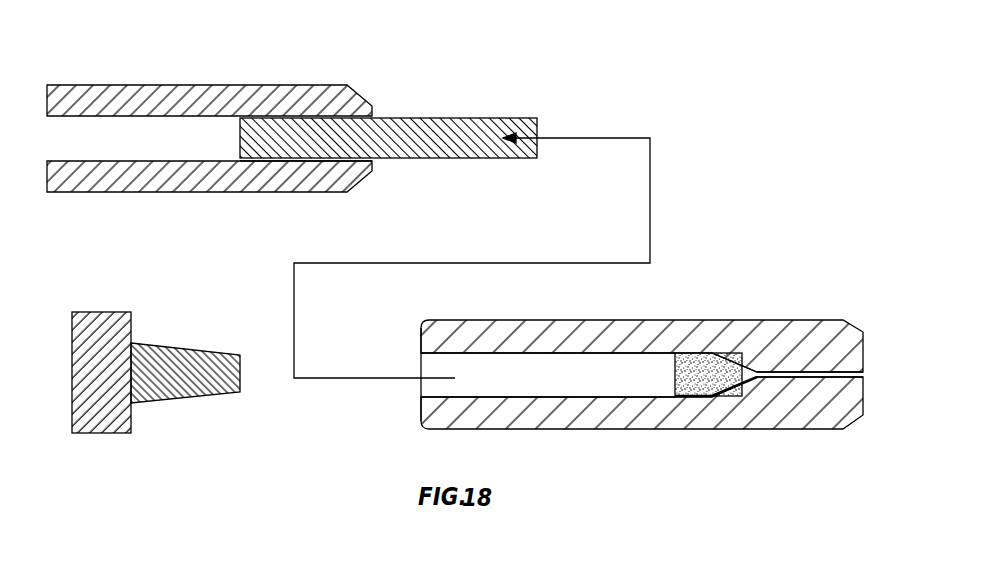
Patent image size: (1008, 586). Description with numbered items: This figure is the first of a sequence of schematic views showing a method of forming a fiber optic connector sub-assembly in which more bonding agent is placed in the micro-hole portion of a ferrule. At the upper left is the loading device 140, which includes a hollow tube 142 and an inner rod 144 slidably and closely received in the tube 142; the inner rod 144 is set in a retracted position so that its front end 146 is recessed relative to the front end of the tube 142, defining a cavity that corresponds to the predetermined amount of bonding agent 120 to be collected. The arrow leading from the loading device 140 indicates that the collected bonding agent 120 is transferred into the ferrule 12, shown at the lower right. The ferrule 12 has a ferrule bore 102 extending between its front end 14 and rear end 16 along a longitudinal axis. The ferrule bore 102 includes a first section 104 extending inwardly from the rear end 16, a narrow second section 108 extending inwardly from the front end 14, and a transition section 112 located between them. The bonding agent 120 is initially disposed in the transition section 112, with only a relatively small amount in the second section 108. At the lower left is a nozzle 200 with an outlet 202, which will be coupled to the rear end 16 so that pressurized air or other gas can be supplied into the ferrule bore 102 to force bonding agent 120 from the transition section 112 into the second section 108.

The ferrule 12 is at (598, 369).
The front end 14 is at (863, 343).
The rear end 16 is at (420, 407).
The ferrule bore 102 is at (453, 366).
The first section 104 is at (588, 397).
The second section 108 is at (810, 372).
The transition section 112 is at (746, 381).
The bonding agent 120 is at (700, 397).
The loading device 140 is at (292, 114).
The hollow tube 142 is at (237, 85).
The inner rod 144 is at (397, 117).
The front end of the inner rod 146 is at (372, 163).
The nozzle 200 is at (172, 417).
The outlet 202 is at (240, 372).